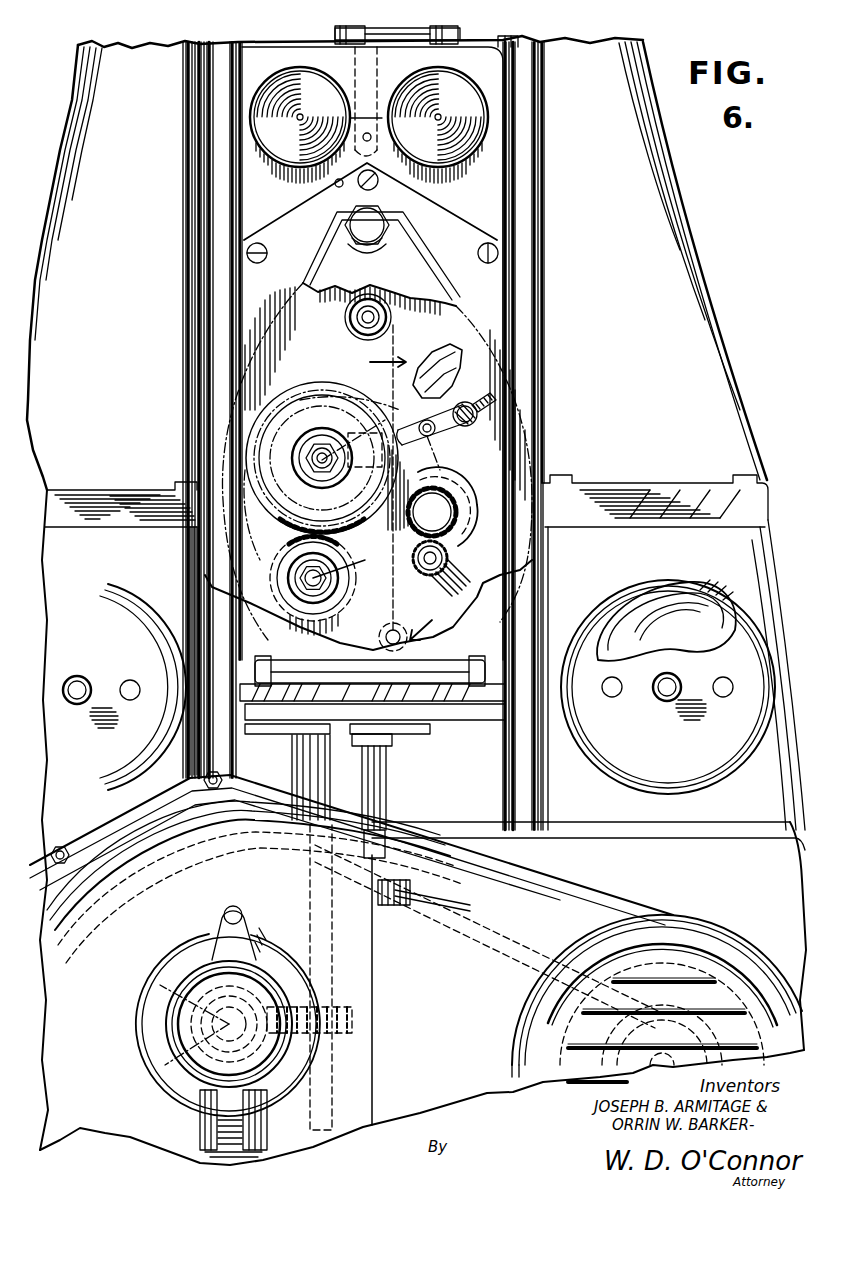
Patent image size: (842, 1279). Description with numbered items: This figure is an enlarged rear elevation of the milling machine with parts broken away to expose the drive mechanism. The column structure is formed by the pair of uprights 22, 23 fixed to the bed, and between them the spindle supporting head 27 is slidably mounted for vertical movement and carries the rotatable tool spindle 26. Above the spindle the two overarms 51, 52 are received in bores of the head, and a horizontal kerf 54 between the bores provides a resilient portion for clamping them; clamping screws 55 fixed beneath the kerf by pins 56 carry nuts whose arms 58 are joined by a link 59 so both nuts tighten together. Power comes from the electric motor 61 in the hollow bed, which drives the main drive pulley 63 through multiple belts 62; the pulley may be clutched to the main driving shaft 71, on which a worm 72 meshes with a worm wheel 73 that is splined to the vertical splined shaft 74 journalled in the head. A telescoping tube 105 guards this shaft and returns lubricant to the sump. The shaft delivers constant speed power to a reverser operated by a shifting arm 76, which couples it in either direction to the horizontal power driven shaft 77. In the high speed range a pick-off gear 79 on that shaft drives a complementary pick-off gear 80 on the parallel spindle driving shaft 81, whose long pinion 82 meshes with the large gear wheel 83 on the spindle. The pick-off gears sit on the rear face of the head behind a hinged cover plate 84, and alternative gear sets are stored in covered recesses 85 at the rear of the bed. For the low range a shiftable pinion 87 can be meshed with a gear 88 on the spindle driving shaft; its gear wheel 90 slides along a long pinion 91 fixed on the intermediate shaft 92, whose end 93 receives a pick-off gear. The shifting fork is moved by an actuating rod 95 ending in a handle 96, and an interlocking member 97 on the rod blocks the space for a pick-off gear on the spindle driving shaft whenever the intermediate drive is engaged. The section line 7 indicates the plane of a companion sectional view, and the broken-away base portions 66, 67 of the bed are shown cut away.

The upright 22 is at (690, 248).
The upright 23 is at (68, 190).
The spindle supporting head 27 is at (500, 198).
The overarm 51 is at (438, 125).
The overarm 52 is at (300, 125).
The kerf 54 is at (368, 110).
The clamping screw 55 is at (338, 30).
The pin 56 is at (370, 152).
The arm 58 is at (470, 20).
The link 59 is at (458, 36).
The tool spindle 26 is at (350, 326).
The section line 7 is at (401, 482).
The shifting arm 76 is at (380, 630).
The horizontal power driven shaft 77 is at (352, 560).
The pick-off gear 79 is at (280, 578).
The pick-off gear 80 is at (262, 505).
The spindle driving shaft 81 is at (320, 470).
The long pinion 82 is at (350, 415).
The large gear wheel 83 is at (436, 352).
The hinged cover plate 84 is at (420, 245).
The covered recess 85 is at (712, 618).
The shiftable pinion 87 is at (439, 506).
The gear 88 is at (322, 420).
The gear wheel 90 is at (470, 498).
The long pinion 91 is at (455, 540).
The intermediate shaft 92 is at (432, 575).
The end of intermediate shaft 93 is at (448, 562).
The actuating rod 95 is at (494, 400).
The actuating handle 96 is at (477, 412).
The interlocking member 97 is at (470, 405).
The telescoping tube 105 is at (292, 780).
The base 66 is at (465, 828).
The casing 67 is at (422, 827).
The electric motor 61 is at (735, 960).
The belts 62 is at (500, 926).
The main drive pulley 63 is at (412, 996).
The main driving shaft 71 is at (201, 1012).
The worm 72 is at (150, 1075).
The worm wheel 73 is at (305, 1040).
The splined shaft 74 is at (300, 910).